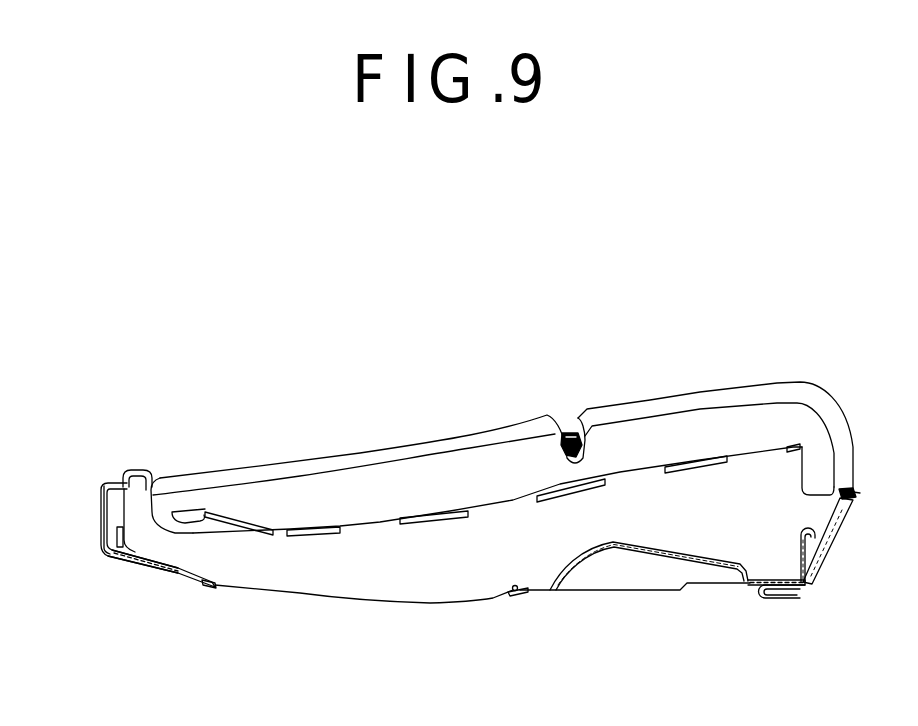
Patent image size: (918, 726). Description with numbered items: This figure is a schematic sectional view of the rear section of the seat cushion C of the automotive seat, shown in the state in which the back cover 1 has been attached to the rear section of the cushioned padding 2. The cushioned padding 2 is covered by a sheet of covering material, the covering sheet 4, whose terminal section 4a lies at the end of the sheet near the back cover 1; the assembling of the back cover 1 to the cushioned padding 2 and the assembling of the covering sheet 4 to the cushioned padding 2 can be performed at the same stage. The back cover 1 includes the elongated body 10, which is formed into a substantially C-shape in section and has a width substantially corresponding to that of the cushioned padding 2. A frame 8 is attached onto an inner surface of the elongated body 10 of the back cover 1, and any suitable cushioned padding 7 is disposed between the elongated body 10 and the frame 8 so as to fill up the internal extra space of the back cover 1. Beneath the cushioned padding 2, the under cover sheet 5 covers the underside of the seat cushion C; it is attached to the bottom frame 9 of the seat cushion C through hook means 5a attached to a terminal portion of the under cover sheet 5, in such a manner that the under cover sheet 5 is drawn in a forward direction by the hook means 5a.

The back cover 1 is at (105, 488).
The cushioned padding 2 is at (650, 423).
The covering sheet 4 is at (419, 444).
The terminal section of the covering sheet 4a is at (137, 470).
The under cover 5 is at (332, 595).
The hook means 5a is at (513, 596).
The cushioned padding 7 is at (105, 520).
The frame 8 is at (140, 558).
The bottom frame 9 is at (647, 550).
The elongated body 10 is at (98, 501).
The seat cushion C is at (740, 378).